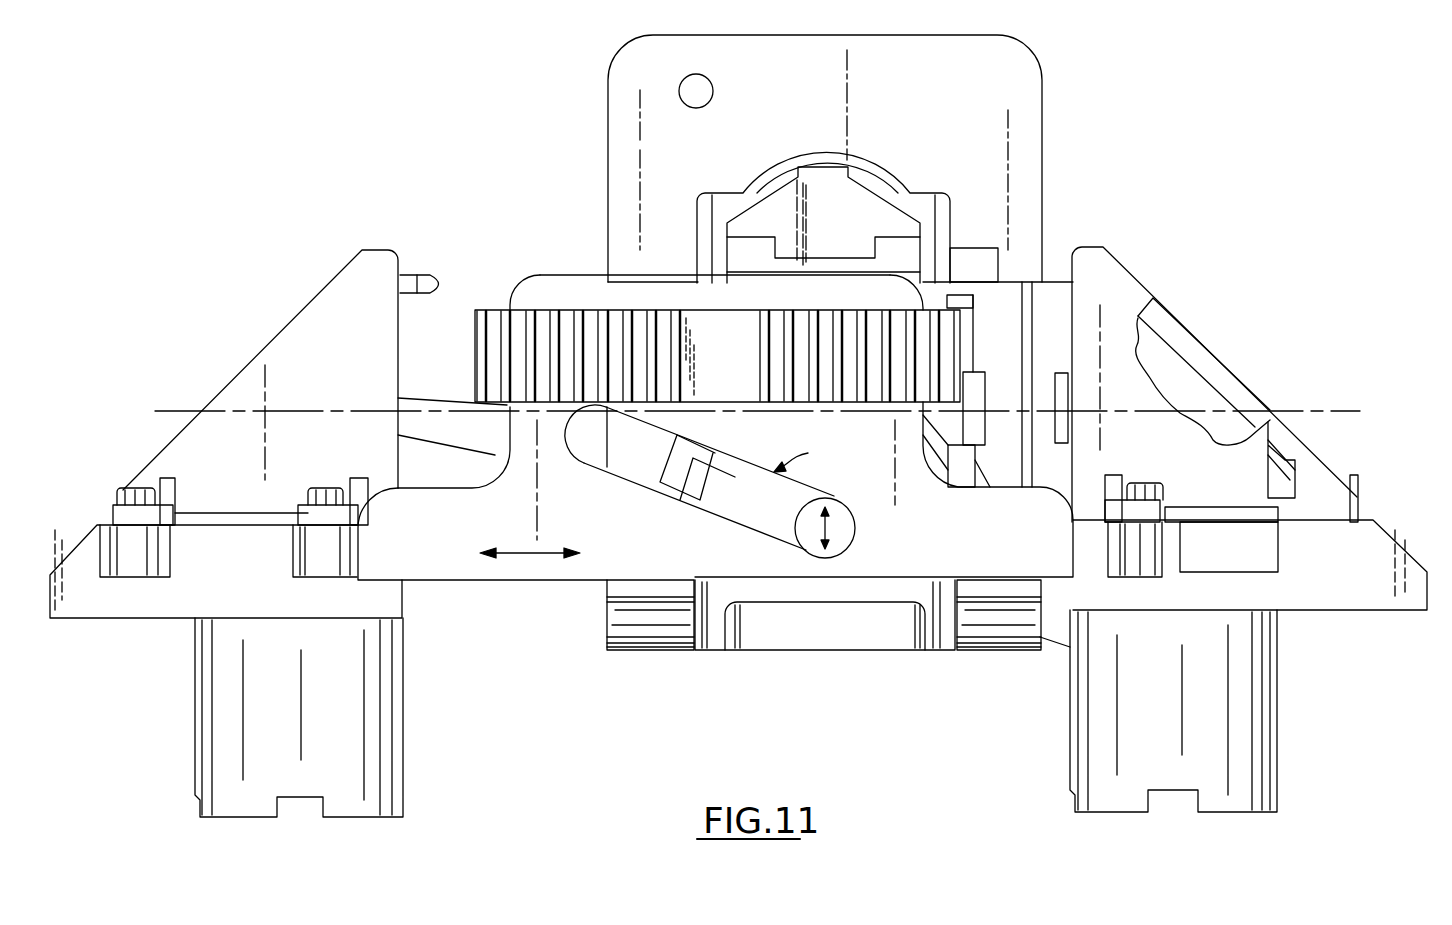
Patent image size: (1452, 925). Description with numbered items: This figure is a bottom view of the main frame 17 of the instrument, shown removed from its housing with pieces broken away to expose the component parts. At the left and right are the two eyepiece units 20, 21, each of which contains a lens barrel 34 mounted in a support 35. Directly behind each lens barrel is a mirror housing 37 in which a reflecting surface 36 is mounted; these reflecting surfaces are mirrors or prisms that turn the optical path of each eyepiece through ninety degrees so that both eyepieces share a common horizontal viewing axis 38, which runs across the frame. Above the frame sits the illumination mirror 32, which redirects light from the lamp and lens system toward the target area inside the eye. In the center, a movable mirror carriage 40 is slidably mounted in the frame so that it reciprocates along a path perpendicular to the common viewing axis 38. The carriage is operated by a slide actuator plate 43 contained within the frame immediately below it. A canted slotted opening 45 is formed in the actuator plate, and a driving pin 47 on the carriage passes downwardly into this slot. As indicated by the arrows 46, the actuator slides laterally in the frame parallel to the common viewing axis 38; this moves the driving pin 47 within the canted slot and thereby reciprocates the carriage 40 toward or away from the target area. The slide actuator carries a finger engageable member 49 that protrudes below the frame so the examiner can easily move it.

The frame 17 is at (1075, 104).
The eyepiece unit 20 is at (226, 646).
The eyepiece unit 21 is at (1025, 735).
The illumination mirror 32 is at (854, 210).
The lens barrel 34 is at (195, 670).
The support 35 is at (137, 607).
The reflecting surface 36 is at (1170, 340).
The mirror housing 37 is at (231, 382).
The common horizontal viewing axis 38 is at (1306, 403).
The movable mirror carriage 40 is at (750, 517).
The slide actuator plate 43 is at (981, 543).
The canted slotted opening 45 is at (810, 454).
The arrows 46 is at (545, 555).
The driving pin 47 is at (842, 537).
The finger engageable member 49 is at (527, 328).